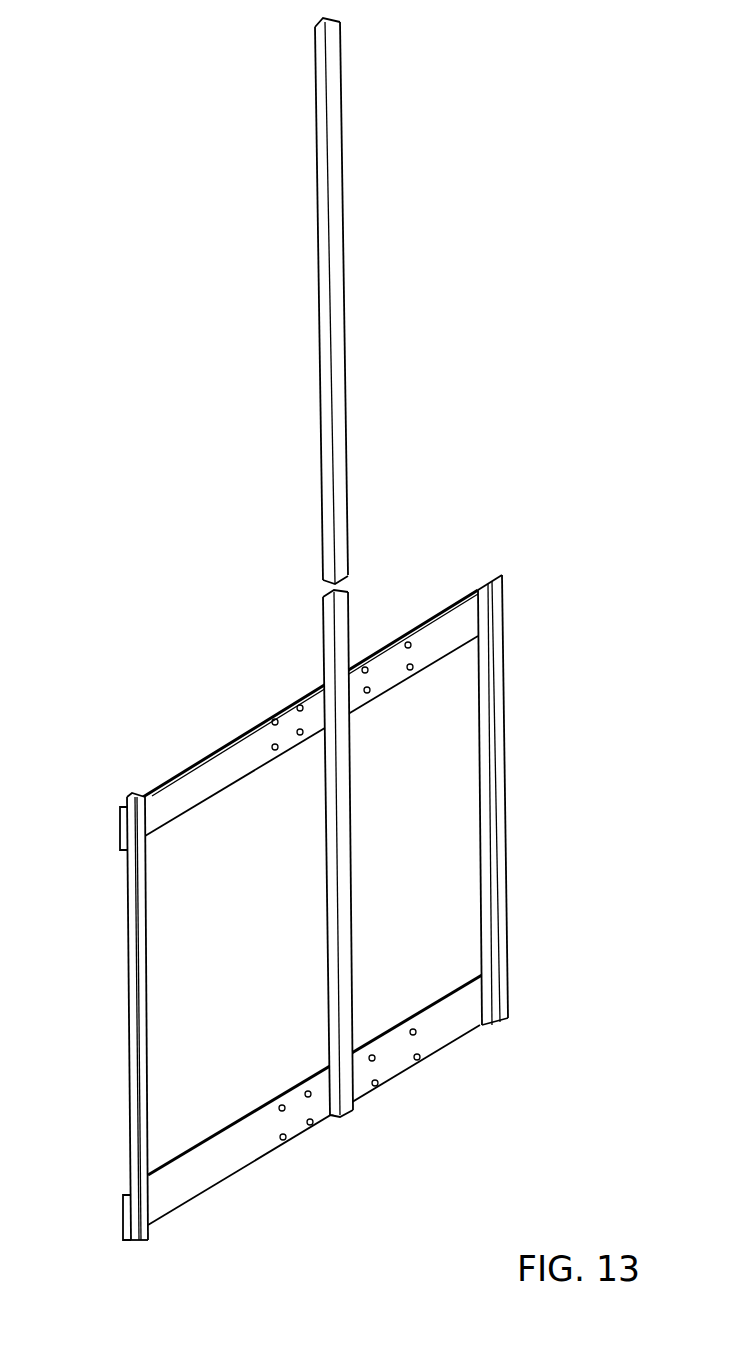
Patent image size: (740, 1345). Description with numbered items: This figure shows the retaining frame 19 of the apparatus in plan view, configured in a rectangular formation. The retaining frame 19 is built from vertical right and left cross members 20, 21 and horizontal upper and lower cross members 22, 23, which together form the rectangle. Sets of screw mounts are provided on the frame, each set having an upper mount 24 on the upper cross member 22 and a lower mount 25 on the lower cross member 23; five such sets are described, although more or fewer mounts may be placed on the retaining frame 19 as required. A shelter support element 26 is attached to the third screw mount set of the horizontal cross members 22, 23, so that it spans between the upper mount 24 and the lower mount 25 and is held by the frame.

The retaining frame 19 is at (515, 462).
The right cross member 20 is at (497, 776).
The left cross member 21 is at (140, 900).
The upper cross member 22 is at (172, 790).
The lower cross member 23 is at (442, 1020).
The upper mount 24 is at (280, 720).
The lower mount 25 is at (277, 748).
The shelter support element 26 is at (333, 158).